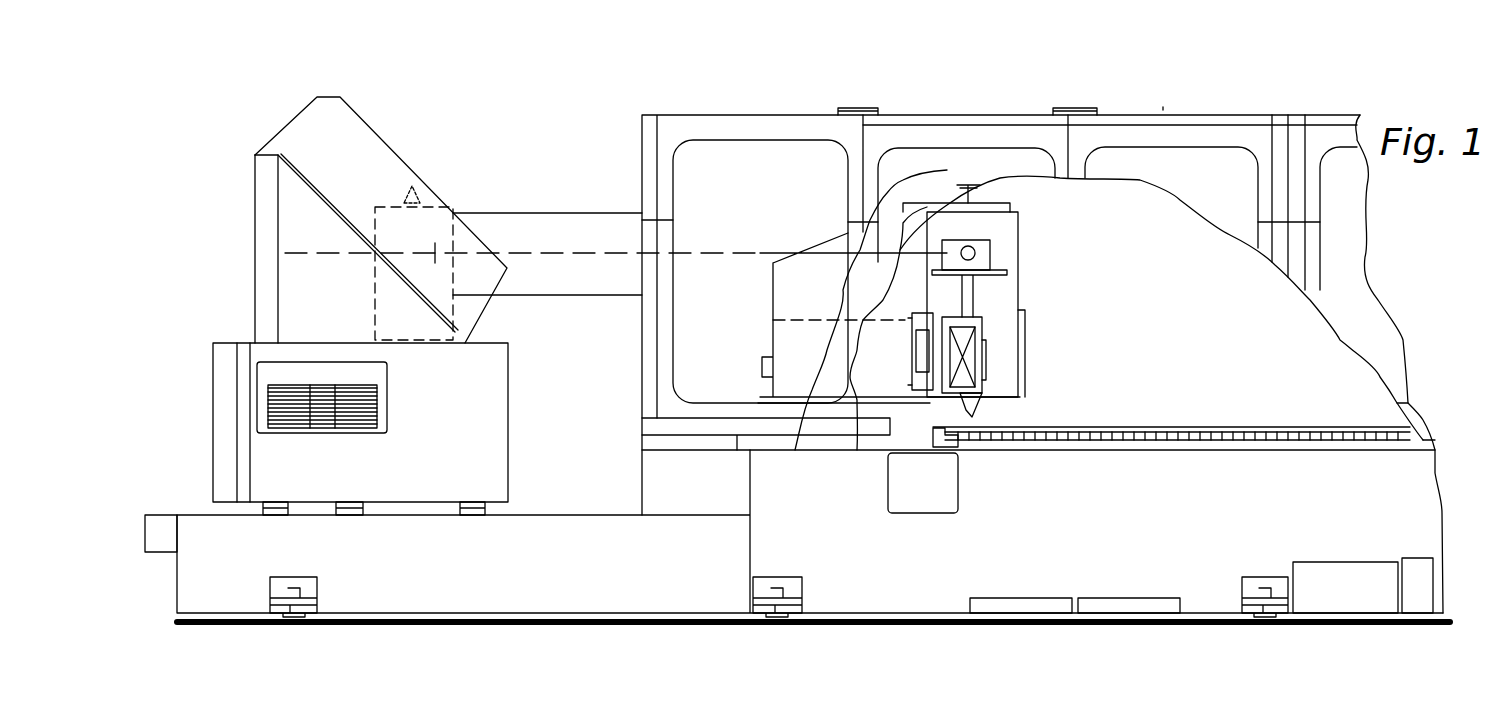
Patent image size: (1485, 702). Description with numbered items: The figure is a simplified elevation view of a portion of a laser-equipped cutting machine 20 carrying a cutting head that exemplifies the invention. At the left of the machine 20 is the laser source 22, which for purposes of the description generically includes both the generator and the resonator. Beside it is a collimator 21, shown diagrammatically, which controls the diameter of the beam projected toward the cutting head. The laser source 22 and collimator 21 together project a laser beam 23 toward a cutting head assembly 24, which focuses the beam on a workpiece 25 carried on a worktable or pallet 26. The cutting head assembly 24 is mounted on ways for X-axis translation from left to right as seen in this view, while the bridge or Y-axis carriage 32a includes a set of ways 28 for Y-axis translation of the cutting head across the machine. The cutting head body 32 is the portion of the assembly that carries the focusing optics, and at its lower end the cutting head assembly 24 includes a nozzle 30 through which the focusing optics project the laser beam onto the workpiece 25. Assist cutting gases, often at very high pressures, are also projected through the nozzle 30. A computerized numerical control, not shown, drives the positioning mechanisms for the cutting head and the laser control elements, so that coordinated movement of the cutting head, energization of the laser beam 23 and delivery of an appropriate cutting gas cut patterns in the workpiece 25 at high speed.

The laser-equipped cutting machine 20 is at (1058, 60).
The collimator 21 is at (533, 213).
The laser source 22 is at (287, 123).
The laser beam 23 is at (740, 253).
The cutting head assembly 24 is at (1040, 285).
The workpiece 25 is at (1140, 427).
The worktable or pallet 26 is at (1140, 448).
The set of ways 28 is at (910, 375).
The nozzle 30 is at (975, 420).
The cutting head 32 is at (973, 325).
The bridge or Y-axis carriage 32a is at (927, 210).